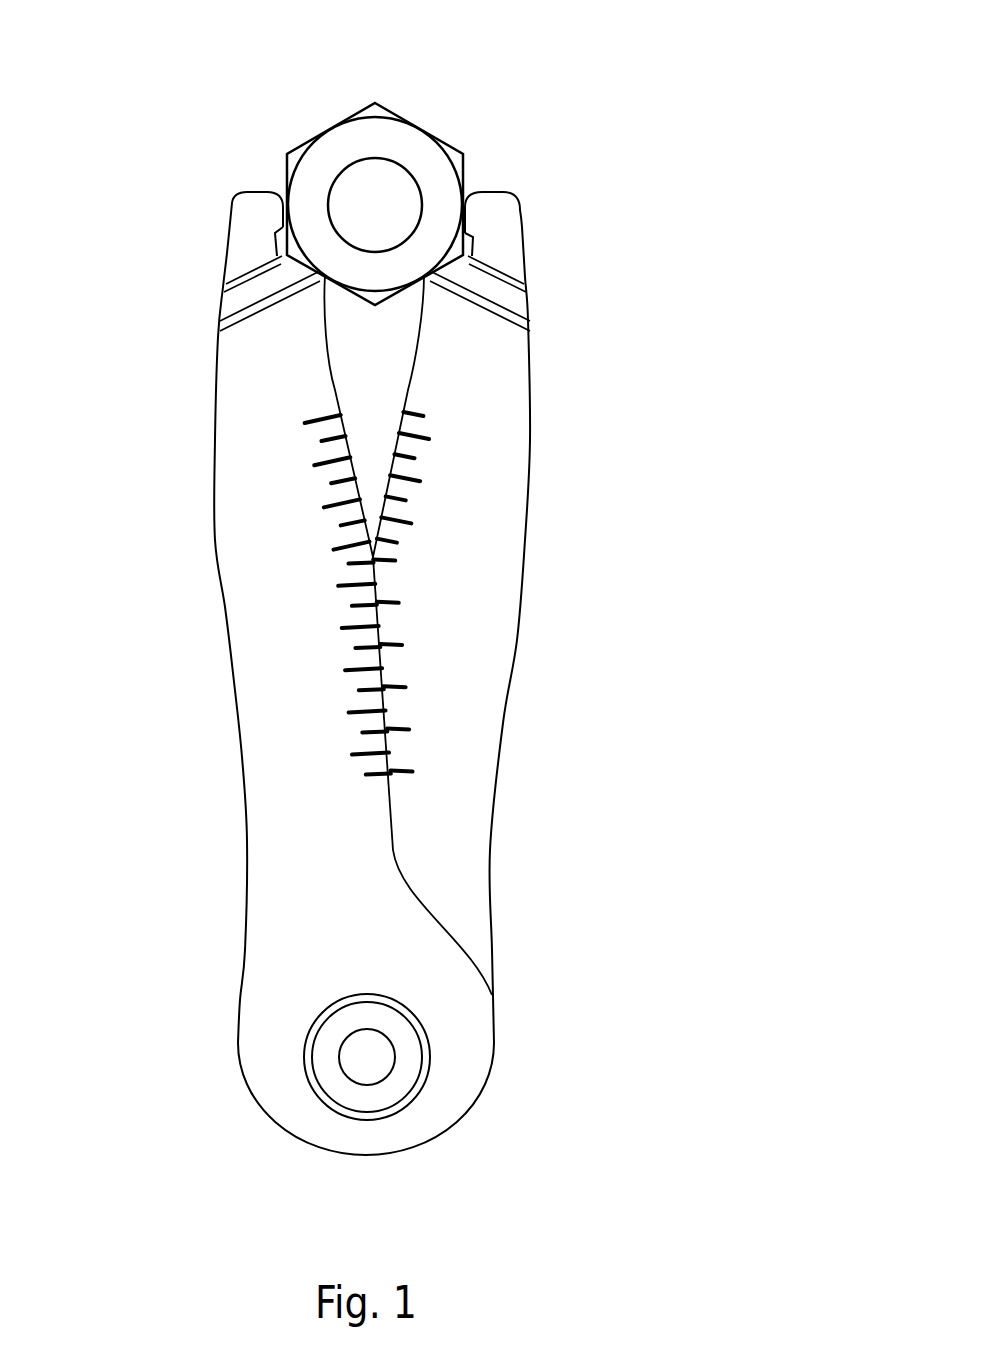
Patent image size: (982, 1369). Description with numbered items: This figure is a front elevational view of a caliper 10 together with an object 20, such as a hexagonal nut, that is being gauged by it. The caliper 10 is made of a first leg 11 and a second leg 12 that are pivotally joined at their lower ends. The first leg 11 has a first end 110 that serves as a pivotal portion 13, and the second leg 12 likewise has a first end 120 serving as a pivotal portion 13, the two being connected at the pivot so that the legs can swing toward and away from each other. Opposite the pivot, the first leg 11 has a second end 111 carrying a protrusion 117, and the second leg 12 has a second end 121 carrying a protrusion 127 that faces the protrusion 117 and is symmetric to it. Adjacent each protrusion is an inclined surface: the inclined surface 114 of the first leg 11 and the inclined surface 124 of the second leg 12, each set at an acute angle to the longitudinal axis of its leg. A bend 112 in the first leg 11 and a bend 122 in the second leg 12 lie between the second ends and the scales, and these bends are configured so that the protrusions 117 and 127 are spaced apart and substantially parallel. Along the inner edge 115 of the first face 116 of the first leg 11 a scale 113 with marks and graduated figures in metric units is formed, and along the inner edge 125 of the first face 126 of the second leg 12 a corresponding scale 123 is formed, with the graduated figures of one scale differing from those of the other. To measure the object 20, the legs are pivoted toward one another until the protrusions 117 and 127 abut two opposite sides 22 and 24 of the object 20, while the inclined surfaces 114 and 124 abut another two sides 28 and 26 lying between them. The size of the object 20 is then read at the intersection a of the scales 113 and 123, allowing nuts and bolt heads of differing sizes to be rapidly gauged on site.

The caliper 10 is at (583, 927).
The first leg 11 is at (463, 813).
The second leg 12 is at (275, 810).
The pivotal portion 13 is at (370, 1067).
The object 20 is at (427, 175).
The side of object 22 is at (466, 185).
The side of object 24 is at (288, 210).
The side of object 26 is at (408, 285).
The side of object 28 is at (352, 297).
The first end of first leg 110 is at (483, 968).
The second end of first leg 111 is at (497, 228).
The bend 112 is at (495, 295).
The scale 113 is at (458, 527).
The inclined surface 114 is at (503, 273).
The inner edge 115 is at (405, 398).
The first face of first leg 116 is at (508, 592).
The protrusion 117 is at (472, 217).
The first end of second leg 120 is at (280, 1087).
The second end of second leg 121 is at (253, 228).
The bend 122 is at (253, 287).
The scale 123 is at (293, 525).
The inclined surface 124 is at (275, 258).
The inner edge 125 is at (328, 398).
The first face of second leg 126 is at (273, 603).
The protrusion 127 is at (281, 213).
The intersection a is at (375, 558).